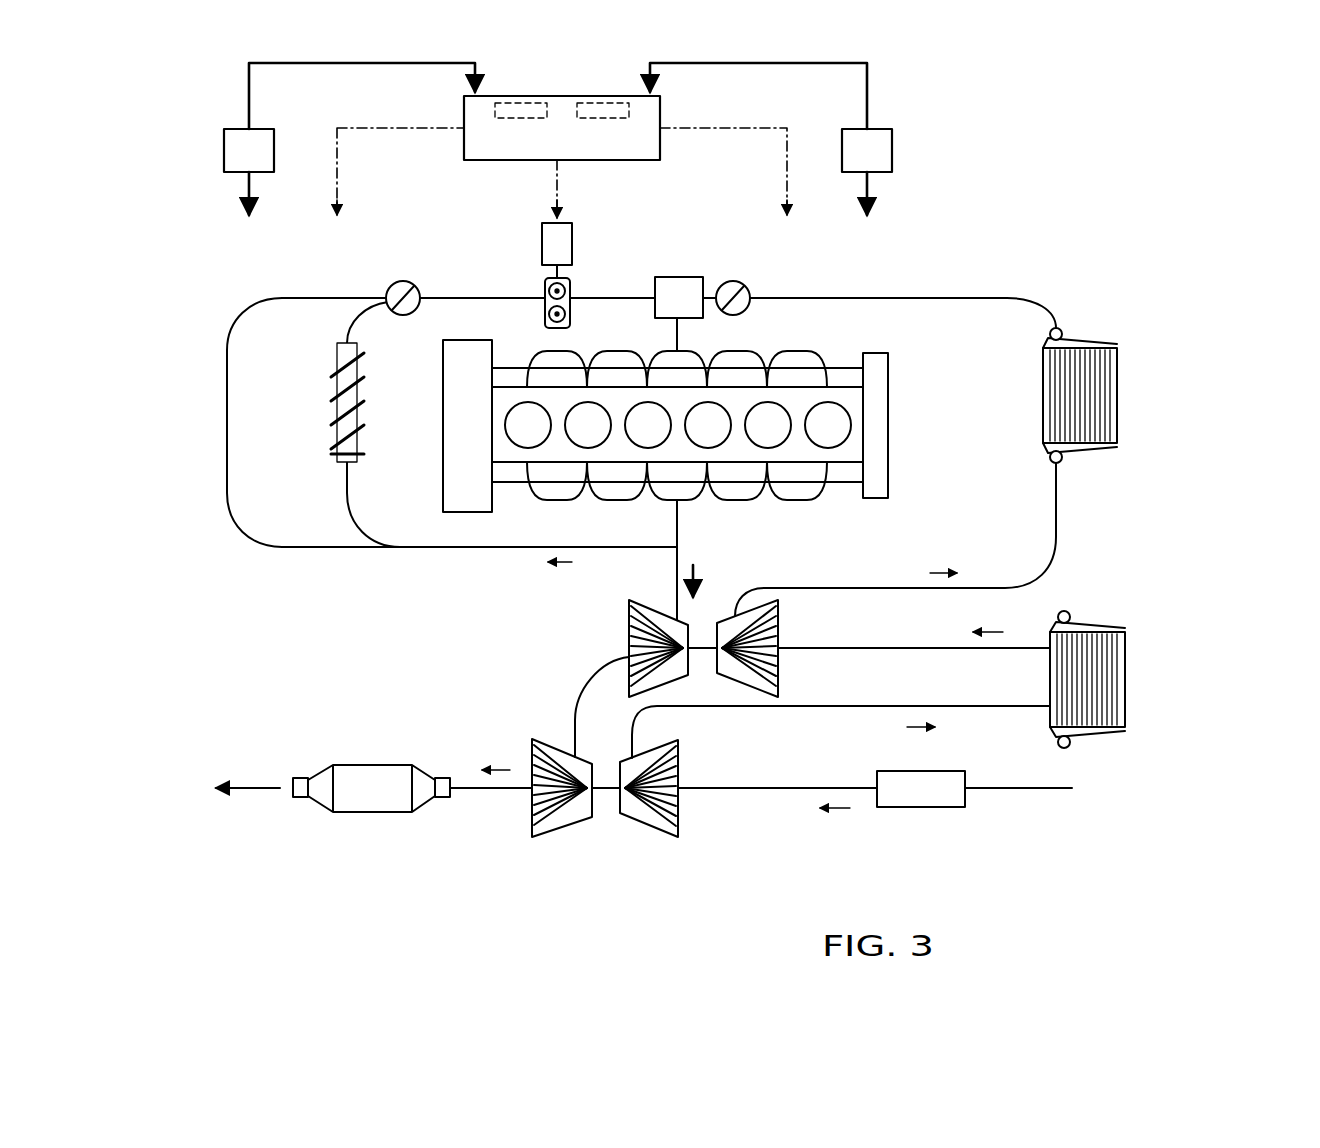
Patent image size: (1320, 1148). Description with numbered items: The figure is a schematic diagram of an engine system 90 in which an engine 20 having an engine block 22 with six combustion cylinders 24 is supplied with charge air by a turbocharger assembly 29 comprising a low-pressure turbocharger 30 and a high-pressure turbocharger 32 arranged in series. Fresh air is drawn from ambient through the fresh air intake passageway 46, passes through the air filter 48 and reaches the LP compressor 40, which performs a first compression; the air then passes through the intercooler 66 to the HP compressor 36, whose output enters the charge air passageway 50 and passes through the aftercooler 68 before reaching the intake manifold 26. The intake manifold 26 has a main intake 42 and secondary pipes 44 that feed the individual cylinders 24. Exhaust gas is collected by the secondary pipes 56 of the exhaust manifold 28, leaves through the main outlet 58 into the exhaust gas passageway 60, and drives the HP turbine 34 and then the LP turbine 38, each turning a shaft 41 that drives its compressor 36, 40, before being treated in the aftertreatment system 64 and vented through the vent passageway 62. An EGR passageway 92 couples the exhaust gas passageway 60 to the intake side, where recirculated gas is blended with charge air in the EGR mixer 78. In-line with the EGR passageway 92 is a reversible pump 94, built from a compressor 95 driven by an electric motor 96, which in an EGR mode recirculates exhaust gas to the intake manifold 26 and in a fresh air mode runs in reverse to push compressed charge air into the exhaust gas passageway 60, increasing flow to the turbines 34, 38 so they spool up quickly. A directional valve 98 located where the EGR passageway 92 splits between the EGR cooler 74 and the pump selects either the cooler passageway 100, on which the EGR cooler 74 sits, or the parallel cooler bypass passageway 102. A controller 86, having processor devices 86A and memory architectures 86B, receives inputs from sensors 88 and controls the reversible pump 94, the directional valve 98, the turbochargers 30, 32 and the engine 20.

The engine 20 is at (726, 434).
The engine block 22 is at (888, 475).
The combustion cylinders 24 is at (838, 422).
The intake manifold 26 is at (862, 332).
The exhaust manifold 28 is at (547, 509).
The turbocharger assembly 29 is at (558, 690).
The low-pressure turbocharger 30 is at (770, 740).
The high-pressure turbocharger 32 is at (857, 624).
The HP turbine 34 is at (627, 650).
The HP compressor 36 is at (780, 628).
The LP turbine 38 is at (532, 820).
The LP compressor 40 is at (682, 758).
The shaft 41 is at (704, 652).
The main intake 42 is at (679, 350).
The secondary pipes 44 is at (828, 370).
The fresh air intake passageway 46 is at (720, 790).
The air filter 48 is at (910, 808).
The charge air passageway 50 is at (975, 297).
The secondary pipes 56 is at (818, 498).
The main outlet 58 is at (677, 515).
The exhaust gas passageway 60 is at (670, 585).
The vent passageway 62 is at (490, 790).
The aftertreatment system 64 is at (372, 813).
The intercooler 66 is at (1125, 686).
The aftercooler 68 is at (1117, 404).
The EGR cooler 74 is at (337, 417).
The EGR mixer 78 is at (682, 277).
The controller 86 is at (597, 161).
The processor devices 86A is at (530, 100).
The memory architectures 86B is at (610, 100).
The sensors 88 is at (224, 148).
The engine system 90 is at (1160, 122).
The EGR passageway 92 is at (590, 300).
The reversible pump 94 is at (604, 270).
The compressor 95 is at (545, 292).
The electric motor 96 is at (542, 243).
The directional valve 98 is at (393, 283).
The cooler passageway 100 is at (365, 532).
The cooler bypass passageway 102 is at (227, 424).